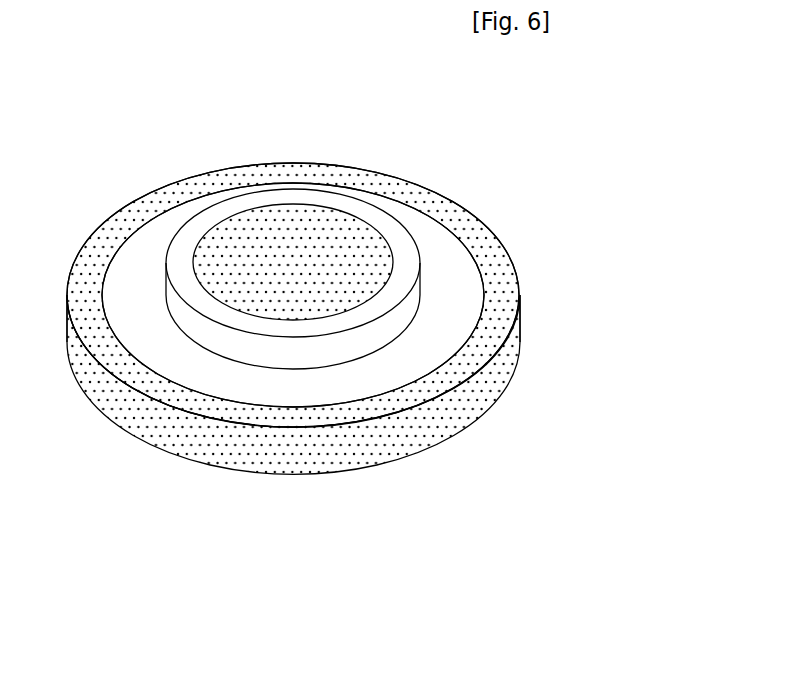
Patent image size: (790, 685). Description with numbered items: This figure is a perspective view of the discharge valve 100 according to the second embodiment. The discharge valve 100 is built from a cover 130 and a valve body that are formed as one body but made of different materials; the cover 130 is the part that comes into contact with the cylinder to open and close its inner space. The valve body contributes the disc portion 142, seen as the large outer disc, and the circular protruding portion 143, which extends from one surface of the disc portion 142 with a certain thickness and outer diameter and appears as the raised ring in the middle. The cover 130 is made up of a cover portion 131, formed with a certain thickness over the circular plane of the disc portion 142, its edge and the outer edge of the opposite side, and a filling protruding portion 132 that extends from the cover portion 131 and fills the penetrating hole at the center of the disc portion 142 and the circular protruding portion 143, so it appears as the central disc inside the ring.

The discharge valve 100 is at (260, 93).
The cover 130 is at (170, 458).
The cover portion 131 is at (382, 468).
The filling protruding portion 132 is at (342, 252).
The disc portion 142 is at (453, 291).
The circular protruding portion 143 is at (178, 247).